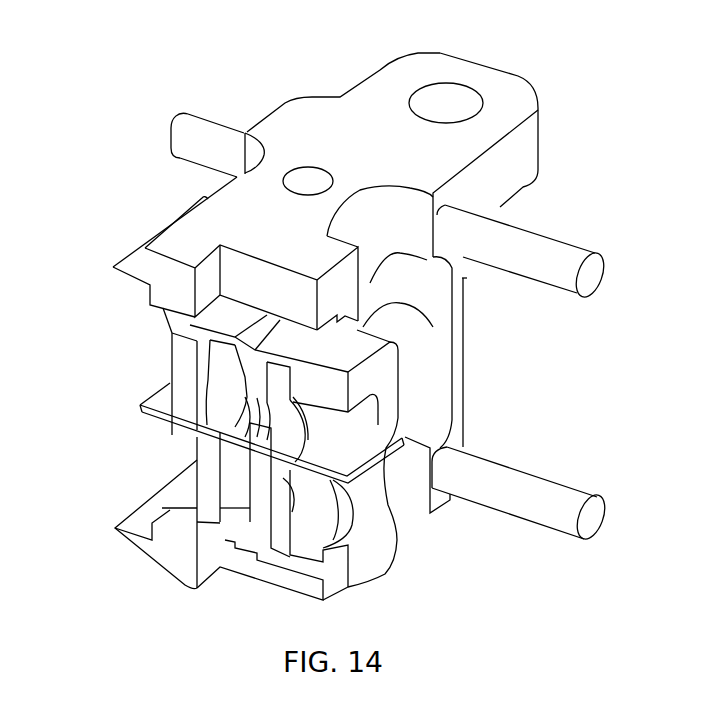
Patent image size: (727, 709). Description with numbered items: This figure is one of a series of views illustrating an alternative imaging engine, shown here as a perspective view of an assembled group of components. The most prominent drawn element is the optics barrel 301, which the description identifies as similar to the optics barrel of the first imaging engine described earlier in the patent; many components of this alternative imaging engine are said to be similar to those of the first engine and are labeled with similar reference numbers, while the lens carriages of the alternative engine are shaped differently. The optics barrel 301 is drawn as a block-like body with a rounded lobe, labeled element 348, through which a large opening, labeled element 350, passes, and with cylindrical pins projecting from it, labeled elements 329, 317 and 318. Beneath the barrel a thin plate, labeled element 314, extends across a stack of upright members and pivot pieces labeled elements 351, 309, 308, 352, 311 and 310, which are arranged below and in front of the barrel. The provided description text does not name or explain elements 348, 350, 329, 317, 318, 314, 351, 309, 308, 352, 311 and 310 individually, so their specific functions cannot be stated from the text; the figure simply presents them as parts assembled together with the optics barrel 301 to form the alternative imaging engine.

The optics barrel 301 is at (525, 152).
The rounded lobe of body 348 is at (509, 103).
The hole 350 is at (446, 103).
The pin 329 is at (209, 135).
The pin 317 is at (548, 257).
The pin 318 is at (545, 498).
The plate 314 is at (140, 407).
The column 351 is at (182, 350).
The arm 309 is at (227, 388).
The pivot member 308 is at (283, 428).
The column 352 is at (207, 478).
The support 311 is at (267, 530).
The pivot member 310 is at (323, 517).